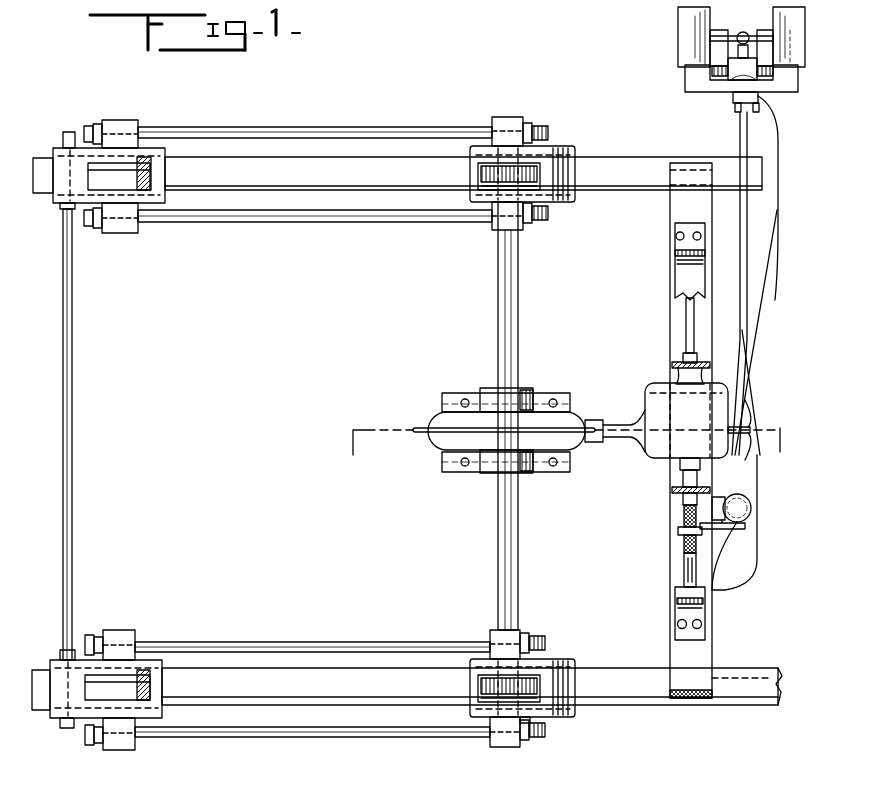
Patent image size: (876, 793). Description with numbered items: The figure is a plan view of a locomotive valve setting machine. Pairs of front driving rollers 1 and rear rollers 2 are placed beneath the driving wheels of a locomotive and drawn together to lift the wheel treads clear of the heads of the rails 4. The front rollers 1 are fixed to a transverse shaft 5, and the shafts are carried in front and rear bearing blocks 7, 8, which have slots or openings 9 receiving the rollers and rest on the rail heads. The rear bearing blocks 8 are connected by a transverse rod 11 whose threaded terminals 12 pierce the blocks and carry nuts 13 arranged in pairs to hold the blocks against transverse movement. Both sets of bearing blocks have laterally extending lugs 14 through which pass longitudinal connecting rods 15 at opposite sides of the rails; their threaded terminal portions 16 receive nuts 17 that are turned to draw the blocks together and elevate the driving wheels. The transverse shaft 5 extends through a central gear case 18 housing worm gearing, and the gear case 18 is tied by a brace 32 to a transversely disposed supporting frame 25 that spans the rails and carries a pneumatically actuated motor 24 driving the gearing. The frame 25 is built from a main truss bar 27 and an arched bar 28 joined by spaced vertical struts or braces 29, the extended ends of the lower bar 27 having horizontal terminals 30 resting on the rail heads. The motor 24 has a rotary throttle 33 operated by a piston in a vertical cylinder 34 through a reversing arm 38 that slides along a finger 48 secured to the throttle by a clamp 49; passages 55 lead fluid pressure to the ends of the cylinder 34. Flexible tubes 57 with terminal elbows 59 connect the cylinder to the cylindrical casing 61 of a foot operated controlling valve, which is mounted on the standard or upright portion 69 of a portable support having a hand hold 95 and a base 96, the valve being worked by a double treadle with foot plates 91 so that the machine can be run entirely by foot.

The front driving rollers 1 is at (530, 665).
The rear rollers 2 is at (150, 150).
The rails 4 is at (728, 715).
The transverse shaft 5 is at (519, 521).
The front bearing blocks 7 is at (566, 206).
The rear bearing blocks 8 is at (72, 670).
The slots or openings 9 is at (86, 700).
The transverse rod 11 is at (72, 498).
The threaded terminals 12 is at (72, 132).
The nuts 13 is at (63, 212).
The laterally extending lugs 14 is at (130, 234).
The longitudinal connecting rods 15 is at (195, 130).
The threaded terminal portions 16 is at (535, 650).
The nuts 17 is at (524, 120).
The central gear case 18 is at (527, 420).
The motor 24 is at (652, 393).
The transversely disposed supporting frame 25 is at (710, 613).
The main truss bar 27 is at (680, 316).
The arched bar 28 is at (685, 288).
The vertical struts or braces 29 is at (712, 362).
The horizontal terminals 30 is at (683, 170).
The brace 32 is at (618, 460).
The rotary throttle 33 is at (687, 548).
The cylinder 34 is at (752, 508).
The reversing arm 38 is at (722, 542).
The finger 48 is at (752, 570).
The clamp 49 is at (682, 532).
The passages 55 is at (712, 506).
The flexible tubes 57 is at (758, 286).
The terminal elbows 59 is at (742, 70).
The cylindrical casing 61 is at (718, 80).
The standard or upright portion 69 is at (688, 119).
The foot plates 91 is at (690, 17).
The hand hold 95 is at (766, 94).
The base 96 is at (686, 70).